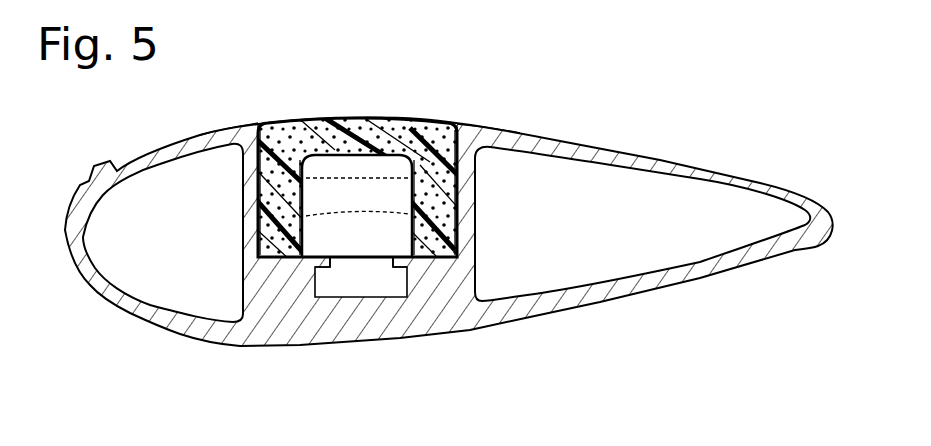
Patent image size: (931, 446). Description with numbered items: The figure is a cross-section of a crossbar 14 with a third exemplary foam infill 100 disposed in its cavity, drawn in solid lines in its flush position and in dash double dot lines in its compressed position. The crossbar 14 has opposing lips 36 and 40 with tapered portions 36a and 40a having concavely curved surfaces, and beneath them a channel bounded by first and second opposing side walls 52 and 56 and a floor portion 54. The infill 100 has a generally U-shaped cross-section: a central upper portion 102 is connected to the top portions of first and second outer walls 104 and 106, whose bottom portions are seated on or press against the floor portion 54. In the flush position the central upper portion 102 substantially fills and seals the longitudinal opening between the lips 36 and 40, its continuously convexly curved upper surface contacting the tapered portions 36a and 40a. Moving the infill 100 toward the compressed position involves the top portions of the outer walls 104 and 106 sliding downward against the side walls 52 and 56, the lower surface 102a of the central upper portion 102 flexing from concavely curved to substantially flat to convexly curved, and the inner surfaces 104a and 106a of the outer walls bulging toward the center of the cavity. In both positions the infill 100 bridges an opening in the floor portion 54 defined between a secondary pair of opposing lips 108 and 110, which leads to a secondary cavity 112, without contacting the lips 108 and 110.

The crossbar 14 is at (74, 207).
The first opposing lip 36 is at (288, 122).
The tapered portion of first lip 36a is at (283, 138).
The second opposing lip 40 is at (427, 138).
The tapered portion of second lip 40a is at (436, 143).
The first opposing side wall 52 is at (243, 195).
The floor portion 54 is at (270, 236).
The second opposing side wall 56 is at (477, 201).
The infill 100 is at (364, 215).
The central upper portion 102 is at (345, 117).
The lower surface of central upper portion 102a is at (360, 158).
The first outer wall 104 is at (319, 190).
The inner surface of first outer wall 104a is at (315, 262).
The second outer wall 106 is at (412, 200).
The inner surface of second outer wall 106a is at (406, 262).
The first secondary lip 108 is at (338, 262).
The second secondary lip 110 is at (388, 264).
The secondary cavity 112 is at (373, 272).